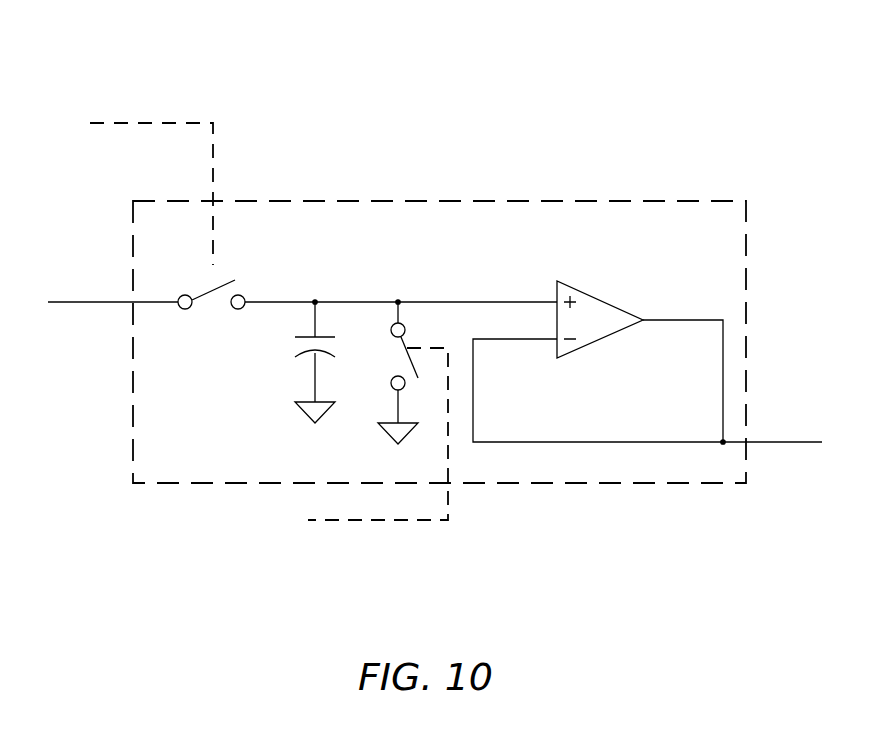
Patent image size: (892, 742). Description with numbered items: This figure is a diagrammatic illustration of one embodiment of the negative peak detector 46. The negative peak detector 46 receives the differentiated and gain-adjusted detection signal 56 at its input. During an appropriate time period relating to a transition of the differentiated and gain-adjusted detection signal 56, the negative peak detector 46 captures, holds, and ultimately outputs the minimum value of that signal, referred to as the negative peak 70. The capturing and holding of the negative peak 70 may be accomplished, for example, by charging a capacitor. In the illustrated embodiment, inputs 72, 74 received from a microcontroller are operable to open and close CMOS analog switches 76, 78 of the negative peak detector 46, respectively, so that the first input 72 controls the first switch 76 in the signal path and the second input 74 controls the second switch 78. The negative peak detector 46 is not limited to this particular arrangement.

The negative peak detector 46 is at (453, 201).
The differentiated and gain-adjusted detection signal 56 is at (72, 302).
The negative peak 70 is at (800, 442).
The input 72 is at (133, 123).
The input 74 is at (330, 520).
The CMOS analog switch 76 is at (250, 283).
The CMOS analog switch 78 is at (428, 393).